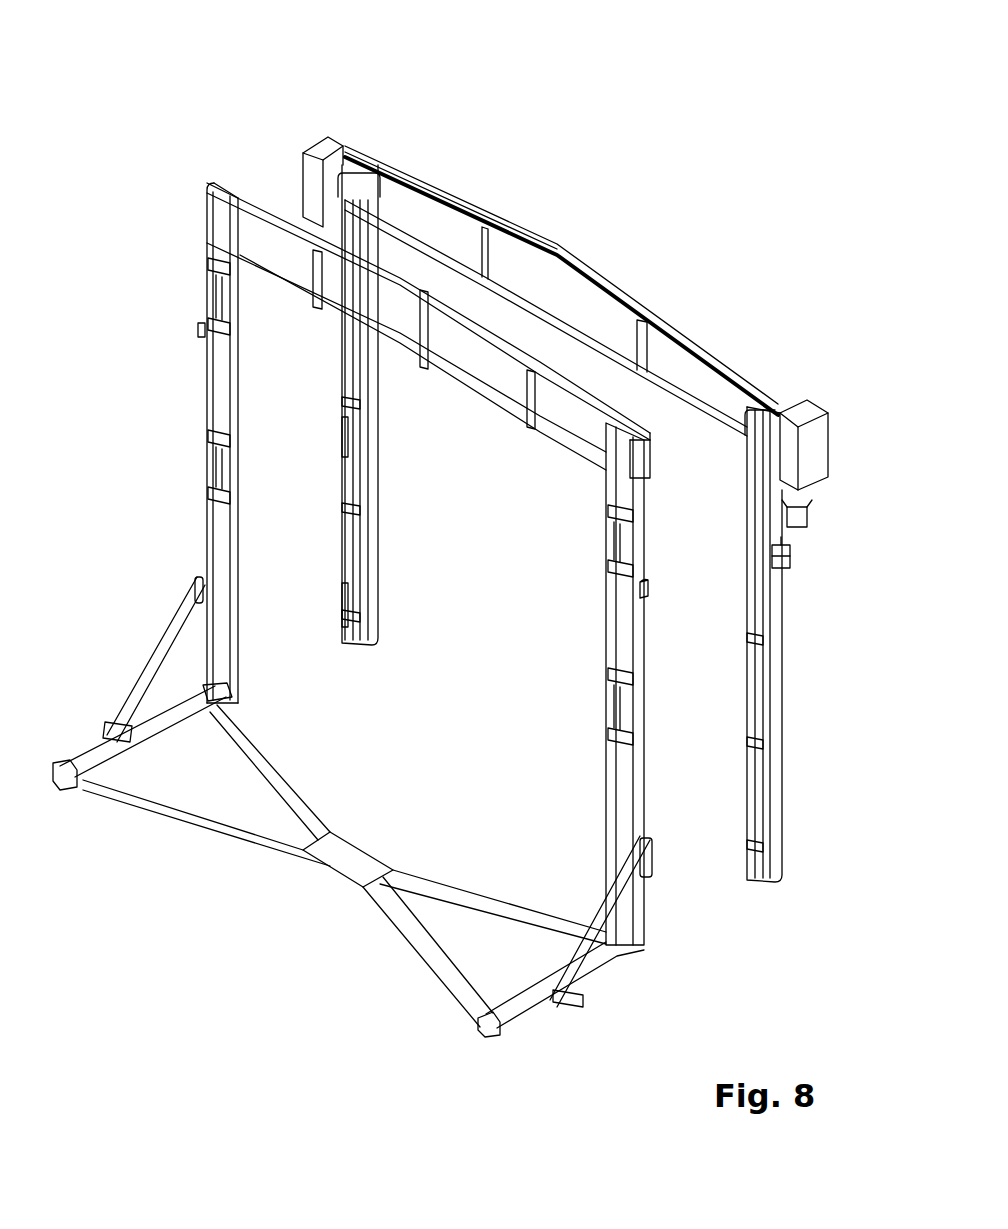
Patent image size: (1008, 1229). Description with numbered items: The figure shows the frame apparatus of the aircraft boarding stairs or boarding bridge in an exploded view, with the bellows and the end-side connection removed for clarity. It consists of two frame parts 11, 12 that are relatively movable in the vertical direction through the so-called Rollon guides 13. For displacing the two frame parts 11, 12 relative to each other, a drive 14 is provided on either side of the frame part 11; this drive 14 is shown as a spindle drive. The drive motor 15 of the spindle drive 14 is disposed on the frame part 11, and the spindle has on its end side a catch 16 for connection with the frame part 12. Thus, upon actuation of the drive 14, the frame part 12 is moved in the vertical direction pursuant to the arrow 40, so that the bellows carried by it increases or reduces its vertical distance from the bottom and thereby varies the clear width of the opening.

The frame part 11 is at (658, 318).
The frame part 12 is at (206, 246).
The Rollon guides 13 is at (345, 447).
The drive 14 is at (336, 135).
The drive motor 15 is at (828, 455).
The catch 16 is at (790, 558).
The arrow 40 is at (168, 365).